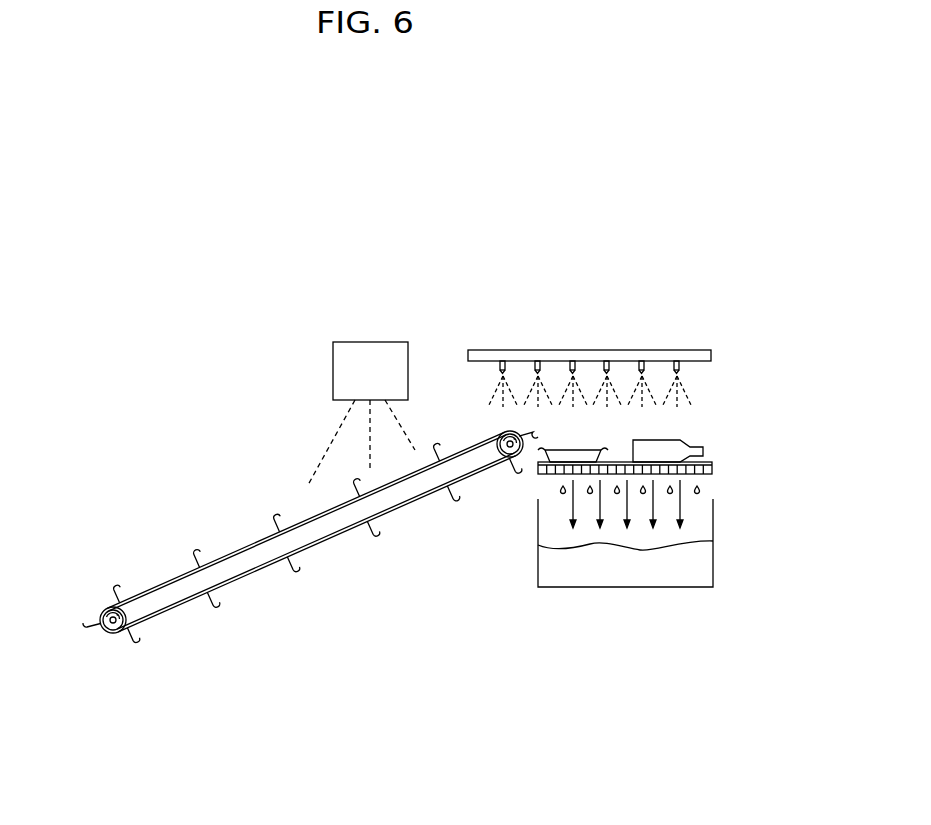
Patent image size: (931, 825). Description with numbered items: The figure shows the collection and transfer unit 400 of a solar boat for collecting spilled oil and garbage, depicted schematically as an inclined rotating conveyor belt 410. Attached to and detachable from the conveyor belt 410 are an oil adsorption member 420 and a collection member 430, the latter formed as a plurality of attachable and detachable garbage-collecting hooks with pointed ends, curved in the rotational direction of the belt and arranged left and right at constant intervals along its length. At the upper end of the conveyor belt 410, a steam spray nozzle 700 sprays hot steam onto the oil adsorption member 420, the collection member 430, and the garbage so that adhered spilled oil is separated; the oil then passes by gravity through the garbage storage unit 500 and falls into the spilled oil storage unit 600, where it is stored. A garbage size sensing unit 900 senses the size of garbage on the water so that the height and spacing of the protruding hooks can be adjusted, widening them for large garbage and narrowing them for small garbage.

The collection and transfer unit 400 is at (293, 602).
The conveyor belt 410 is at (148, 611).
The oil adsorption member 420 is at (115, 634).
The collection member 430 is at (178, 727).
The garbage storage unit 500 is at (714, 470).
The spilled oil storage unit 600 is at (560, 588).
The steam spray nozzle 700 is at (503, 372).
The garbage size sensing unit 900 is at (333, 365).